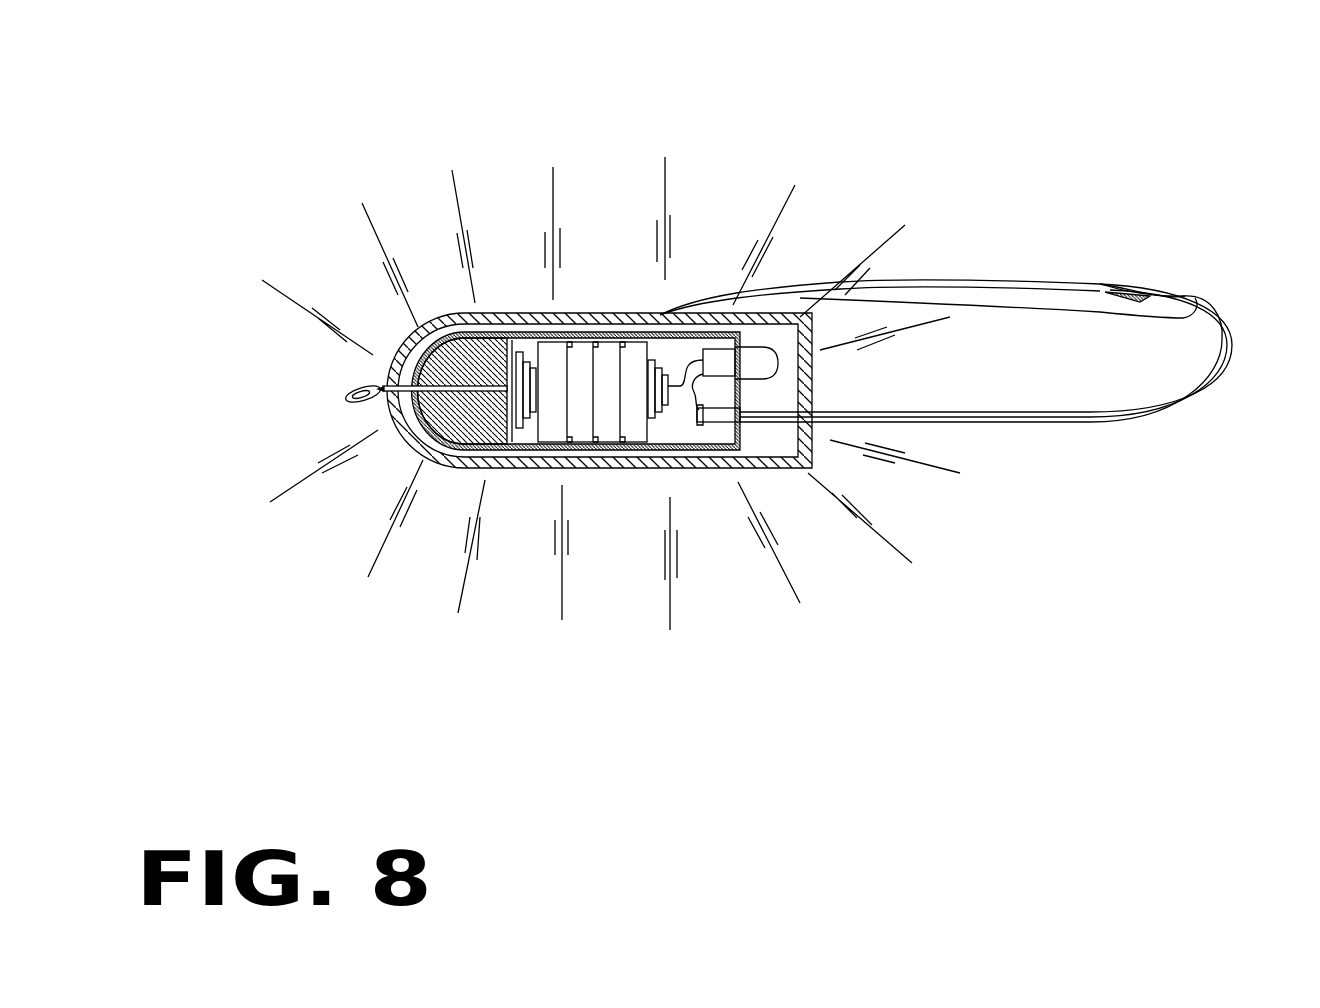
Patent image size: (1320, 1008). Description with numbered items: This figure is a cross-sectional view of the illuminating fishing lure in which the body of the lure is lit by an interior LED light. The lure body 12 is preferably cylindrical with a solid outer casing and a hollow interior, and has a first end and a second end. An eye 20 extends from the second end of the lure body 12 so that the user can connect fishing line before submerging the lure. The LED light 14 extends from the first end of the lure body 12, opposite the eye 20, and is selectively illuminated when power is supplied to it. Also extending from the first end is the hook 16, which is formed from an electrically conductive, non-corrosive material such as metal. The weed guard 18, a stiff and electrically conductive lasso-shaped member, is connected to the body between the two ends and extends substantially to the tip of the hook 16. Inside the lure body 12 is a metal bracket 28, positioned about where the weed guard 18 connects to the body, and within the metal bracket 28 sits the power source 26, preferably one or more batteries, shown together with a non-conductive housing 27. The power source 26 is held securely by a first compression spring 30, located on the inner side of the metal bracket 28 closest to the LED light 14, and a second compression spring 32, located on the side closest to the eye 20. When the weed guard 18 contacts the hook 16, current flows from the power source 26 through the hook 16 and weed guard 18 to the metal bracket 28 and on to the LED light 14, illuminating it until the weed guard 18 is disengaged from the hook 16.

The lure body 12 is at (388, 350).
The LED light 14 is at (767, 347).
The hook 16 is at (1188, 388).
The weed guard 18 is at (965, 277).
The eye 20 is at (357, 393).
The power source 26 is at (582, 415).
The non-conductive housing 27 is at (624, 448).
The metal bracket 28 is at (534, 343).
The first compression spring 30 is at (652, 352).
The second compression spring 32 is at (533, 382).